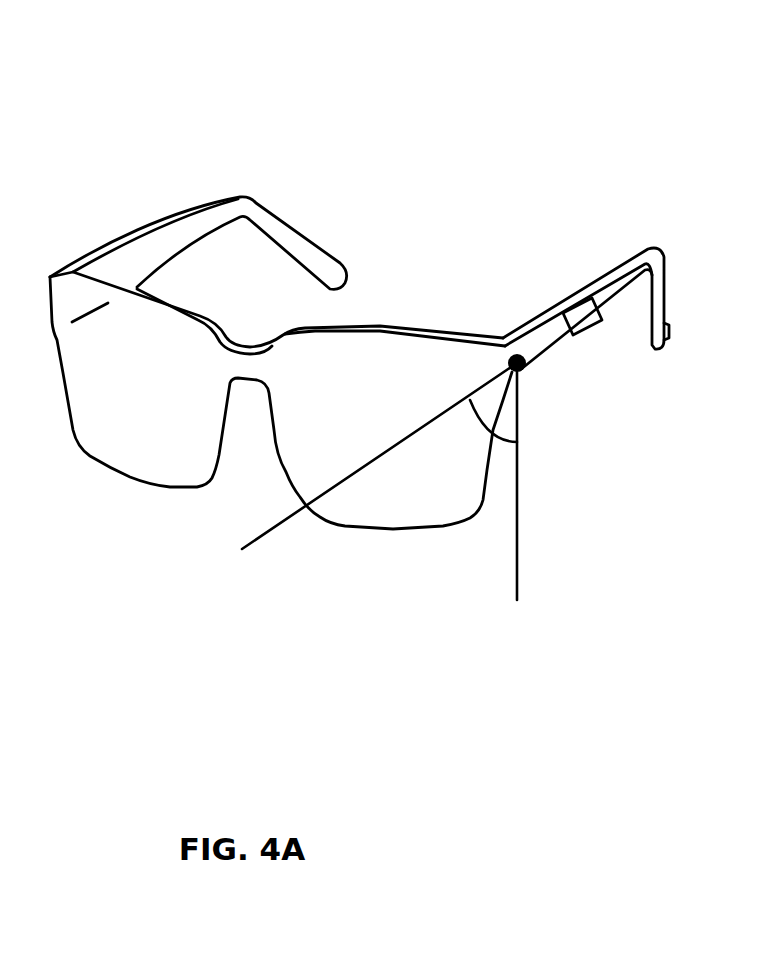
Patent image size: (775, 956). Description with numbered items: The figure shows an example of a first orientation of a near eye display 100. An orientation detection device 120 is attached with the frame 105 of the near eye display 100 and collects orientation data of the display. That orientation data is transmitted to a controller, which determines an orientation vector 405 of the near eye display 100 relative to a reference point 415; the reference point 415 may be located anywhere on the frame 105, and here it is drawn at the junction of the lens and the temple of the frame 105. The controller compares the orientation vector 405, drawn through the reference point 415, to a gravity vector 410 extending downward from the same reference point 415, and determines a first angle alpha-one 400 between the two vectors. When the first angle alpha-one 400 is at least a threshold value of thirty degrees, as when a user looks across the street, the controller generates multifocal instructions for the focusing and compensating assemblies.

The near eye display 100 is at (406, 283).
The frame 105 is at (522, 316).
The orientation detection device 120 is at (588, 330).
The first angle α1 400 is at (500, 449).
The orientation vector 405 is at (352, 502).
The gravity vector 410 is at (522, 524).
The reference point 415 is at (517, 363).